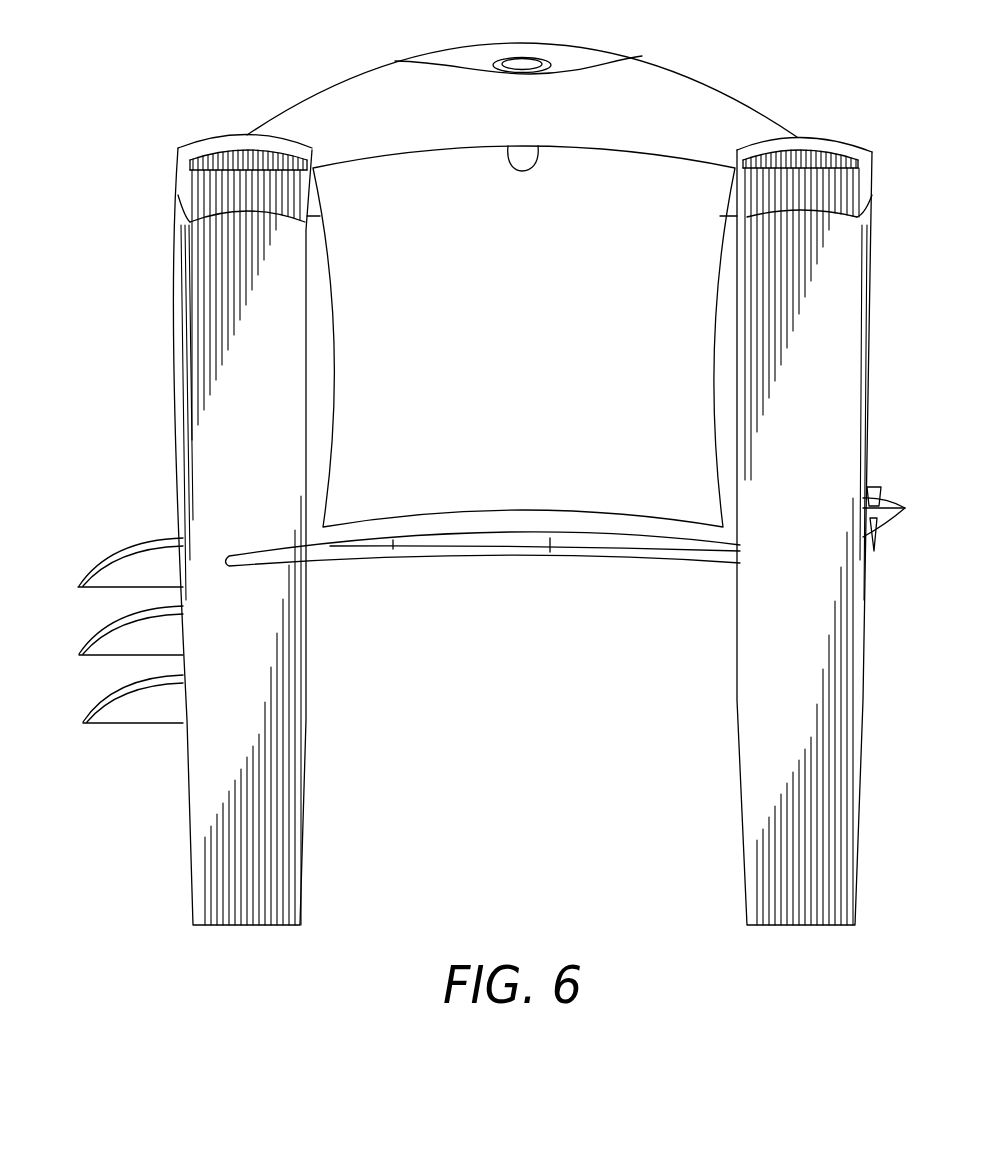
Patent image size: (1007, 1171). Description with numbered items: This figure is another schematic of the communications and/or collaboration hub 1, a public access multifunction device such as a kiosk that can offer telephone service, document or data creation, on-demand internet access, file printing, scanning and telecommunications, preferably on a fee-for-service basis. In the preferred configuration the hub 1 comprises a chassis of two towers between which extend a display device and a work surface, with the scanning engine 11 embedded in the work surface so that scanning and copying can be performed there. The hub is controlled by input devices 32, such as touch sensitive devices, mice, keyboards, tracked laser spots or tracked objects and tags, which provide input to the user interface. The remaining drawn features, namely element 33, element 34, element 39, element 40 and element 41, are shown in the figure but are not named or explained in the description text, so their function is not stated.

The communications and/or collaboration hub 1 is at (357, 45).
The scanning engine 11 is at (393, 542).
The input devices 32 is at (888, 500).
The panel 33 is at (536, 293).
The notch 34 is at (560, 140).
The notch 39 is at (527, 150).
The wing flap 40 is at (590, 548).
The fins 41 is at (122, 548).